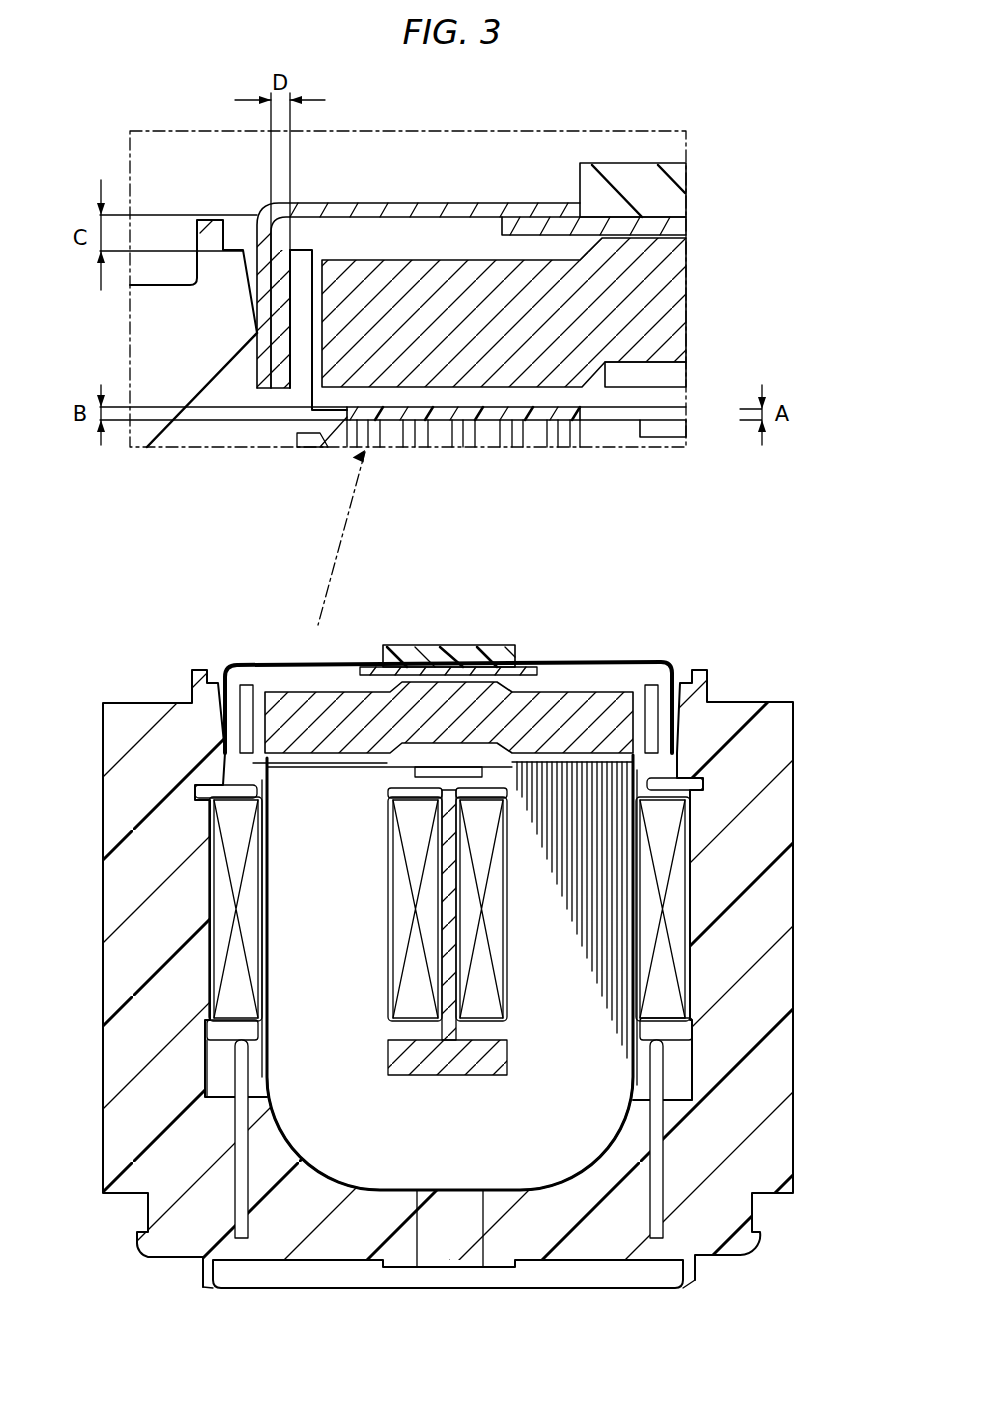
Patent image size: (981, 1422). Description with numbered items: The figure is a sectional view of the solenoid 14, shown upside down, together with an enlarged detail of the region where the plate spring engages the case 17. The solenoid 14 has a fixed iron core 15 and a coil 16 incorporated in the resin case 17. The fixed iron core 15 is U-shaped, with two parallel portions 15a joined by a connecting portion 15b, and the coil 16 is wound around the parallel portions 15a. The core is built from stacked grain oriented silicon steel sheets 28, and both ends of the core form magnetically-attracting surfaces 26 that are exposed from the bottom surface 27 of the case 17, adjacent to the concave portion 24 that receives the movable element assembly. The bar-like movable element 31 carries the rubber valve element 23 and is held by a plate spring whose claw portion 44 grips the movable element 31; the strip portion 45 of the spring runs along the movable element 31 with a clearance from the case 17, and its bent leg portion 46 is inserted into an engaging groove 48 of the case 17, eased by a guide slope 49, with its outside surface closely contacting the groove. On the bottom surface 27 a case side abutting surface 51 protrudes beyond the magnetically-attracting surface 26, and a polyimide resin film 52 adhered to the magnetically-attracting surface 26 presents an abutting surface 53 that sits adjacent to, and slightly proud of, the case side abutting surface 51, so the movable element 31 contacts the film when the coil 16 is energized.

The solenoid 14 is at (692, 638).
The fixed iron core 15 is at (590, 1073).
The parallel portions 15a is at (330, 973).
The connecting portion 15b is at (445, 1122).
The coil 16 is at (222, 937).
The case 17 is at (757, 1158).
The valve element 23 is at (640, 183).
The concave portion 24 is at (638, 715).
The magnetically-attracting surfaces 26 is at (392, 405).
The bottom surface 27 is at (663, 400).
The grain oriented silicon steel sheets 28 is at (617, 862).
The movable element 31 is at (525, 313).
The claw portion 44 is at (640, 377).
The strip portion 45 is at (410, 205).
The leg portion 46 is at (258, 336).
The engaging groove 48 is at (280, 348).
The guide slope 49 is at (263, 317).
The case side abutting surface 51 is at (603, 400).
The resin film 52 is at (483, 417).
The abutting surface 53 is at (430, 393).